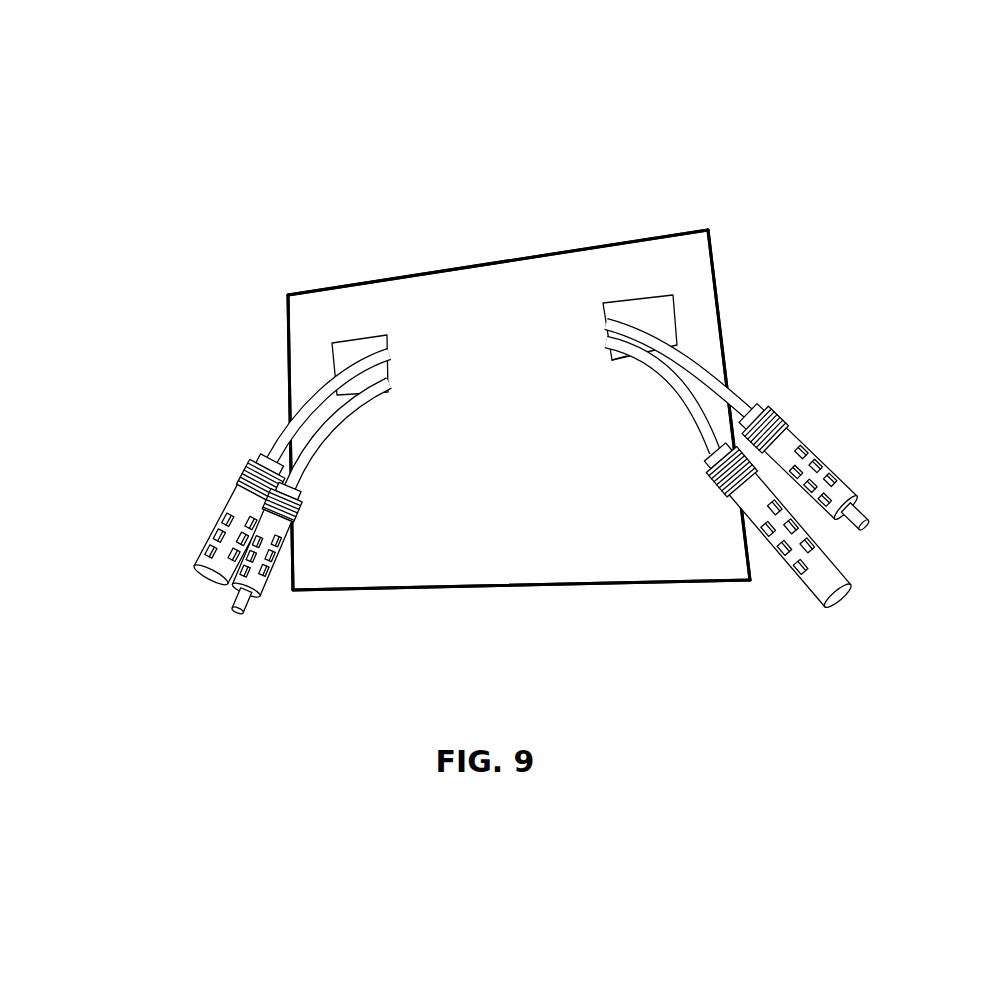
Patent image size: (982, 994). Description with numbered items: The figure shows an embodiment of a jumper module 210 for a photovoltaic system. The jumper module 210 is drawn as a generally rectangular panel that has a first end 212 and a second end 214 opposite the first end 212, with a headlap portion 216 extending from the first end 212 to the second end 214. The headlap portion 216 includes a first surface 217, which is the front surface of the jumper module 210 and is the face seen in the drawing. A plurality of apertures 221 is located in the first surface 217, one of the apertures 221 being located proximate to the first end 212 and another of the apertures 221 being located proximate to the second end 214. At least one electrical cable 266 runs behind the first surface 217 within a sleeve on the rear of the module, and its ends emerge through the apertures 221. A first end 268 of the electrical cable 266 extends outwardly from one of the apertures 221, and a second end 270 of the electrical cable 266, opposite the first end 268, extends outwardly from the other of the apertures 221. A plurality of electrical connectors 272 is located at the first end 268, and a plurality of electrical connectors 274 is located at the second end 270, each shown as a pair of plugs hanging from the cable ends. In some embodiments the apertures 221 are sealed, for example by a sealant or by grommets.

The jumper module 210 is at (404, 206).
The first end 212 is at (714, 252).
The second end 214 is at (288, 350).
The headlap portion 216 is at (525, 279).
The first surface 217 is at (458, 568).
The apertures 221 is at (341, 337).
The electrical cable 266 is at (646, 326).
The first end 268 is at (616, 364).
The second end 270 is at (368, 339).
The electrical connectors 272 is at (844, 494).
The electrical connectors 274 is at (204, 565).